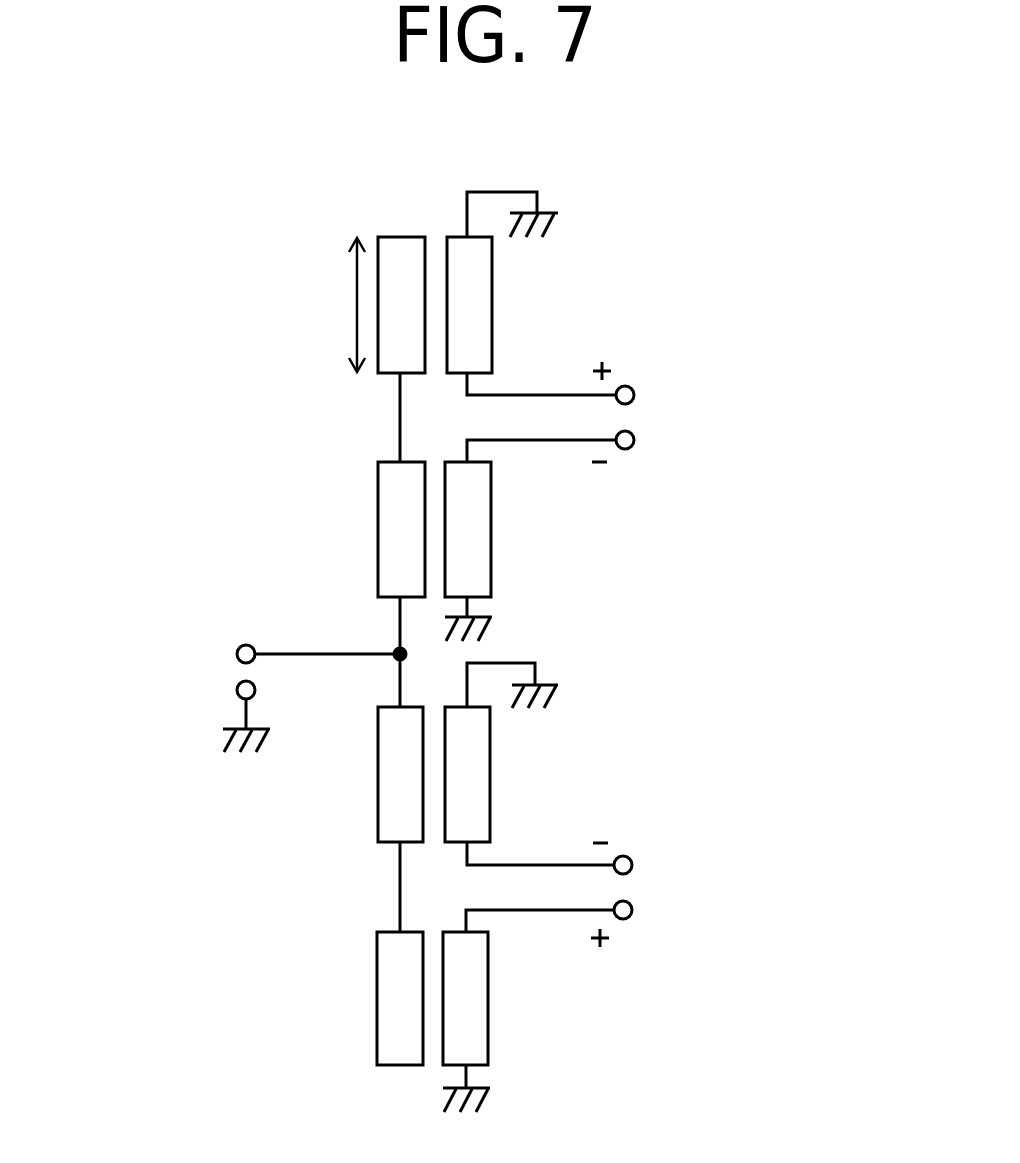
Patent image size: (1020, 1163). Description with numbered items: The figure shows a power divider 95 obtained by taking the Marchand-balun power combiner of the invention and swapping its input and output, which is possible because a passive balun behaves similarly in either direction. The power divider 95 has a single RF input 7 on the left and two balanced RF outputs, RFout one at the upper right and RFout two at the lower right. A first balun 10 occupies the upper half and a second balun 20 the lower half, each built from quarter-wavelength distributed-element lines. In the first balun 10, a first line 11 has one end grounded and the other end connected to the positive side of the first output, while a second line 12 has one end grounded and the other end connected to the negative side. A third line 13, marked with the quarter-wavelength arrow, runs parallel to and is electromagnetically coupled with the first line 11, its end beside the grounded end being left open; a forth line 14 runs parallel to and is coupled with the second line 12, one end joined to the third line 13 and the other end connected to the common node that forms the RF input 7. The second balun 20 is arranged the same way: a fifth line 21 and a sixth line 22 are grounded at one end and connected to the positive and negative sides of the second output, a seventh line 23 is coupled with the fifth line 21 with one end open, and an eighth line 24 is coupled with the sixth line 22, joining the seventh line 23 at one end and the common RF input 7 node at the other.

The power divider 95 is at (112, 972).
The RF input 7 is at (238, 698).
The first balun 10 is at (668, 512).
The first line 11 is at (492, 303).
The second line 12 is at (491, 525).
The third line 13 is at (378, 343).
The forth line 14 is at (378, 530).
The second balun 20 is at (667, 1025).
The fifth line 21 is at (488, 1028).
The sixth line 22 is at (490, 772).
The seventh line 23 is at (377, 1000).
The eighth line 24 is at (378, 778).